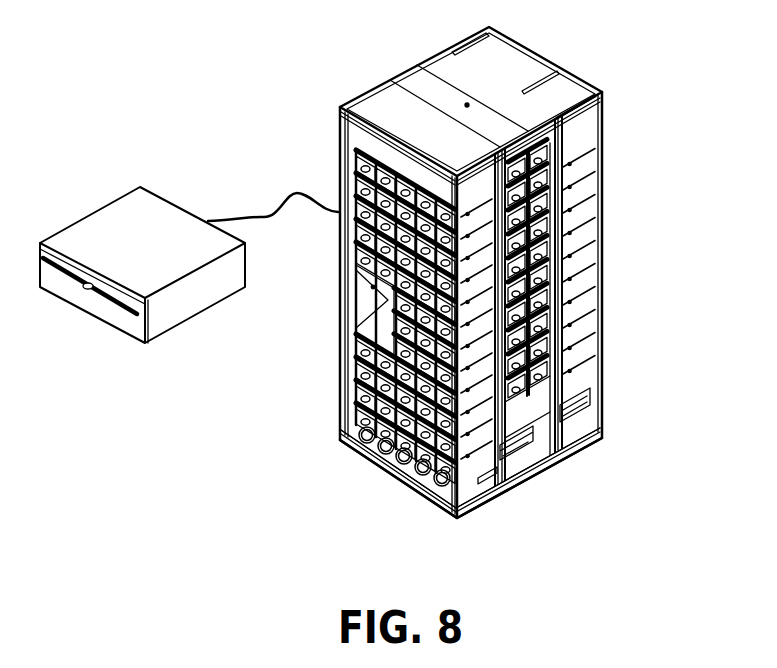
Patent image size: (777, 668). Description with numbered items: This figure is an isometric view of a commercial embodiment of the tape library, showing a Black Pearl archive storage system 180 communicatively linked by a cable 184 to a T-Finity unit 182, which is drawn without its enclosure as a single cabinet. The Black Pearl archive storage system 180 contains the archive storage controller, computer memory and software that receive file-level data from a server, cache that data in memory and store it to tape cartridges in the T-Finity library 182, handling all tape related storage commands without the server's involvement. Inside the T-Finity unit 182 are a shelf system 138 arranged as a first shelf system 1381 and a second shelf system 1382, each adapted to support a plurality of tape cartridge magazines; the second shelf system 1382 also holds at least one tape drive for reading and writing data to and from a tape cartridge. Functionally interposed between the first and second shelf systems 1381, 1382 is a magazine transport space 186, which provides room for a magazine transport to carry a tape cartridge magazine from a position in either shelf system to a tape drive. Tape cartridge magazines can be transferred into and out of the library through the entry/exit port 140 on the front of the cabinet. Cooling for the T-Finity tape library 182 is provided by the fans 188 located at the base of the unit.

The Black Pearl archive storage system 180 is at (117, 200).
The T-Finity unit 182 is at (357, 63).
The cable 184 is at (268, 210).
The entry/exit port 140 is at (366, 300).
The shelf system 138 is at (486, 304).
The first shelf system 1381 is at (361, 313).
The second shelf system 1382 is at (583, 297).
The magazine transport space 186 is at (535, 440).
The fans 188 is at (366, 459).